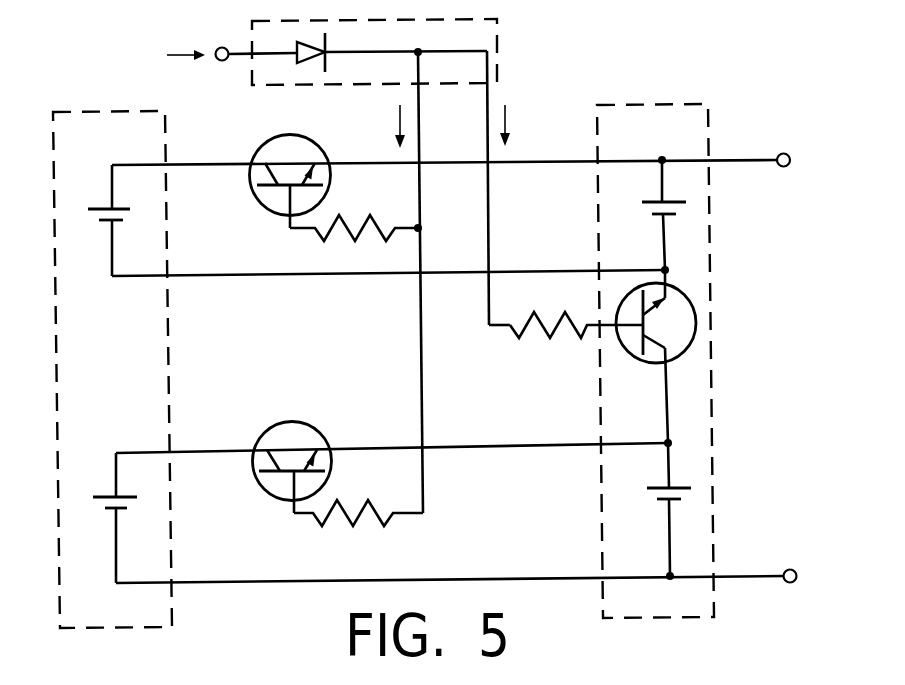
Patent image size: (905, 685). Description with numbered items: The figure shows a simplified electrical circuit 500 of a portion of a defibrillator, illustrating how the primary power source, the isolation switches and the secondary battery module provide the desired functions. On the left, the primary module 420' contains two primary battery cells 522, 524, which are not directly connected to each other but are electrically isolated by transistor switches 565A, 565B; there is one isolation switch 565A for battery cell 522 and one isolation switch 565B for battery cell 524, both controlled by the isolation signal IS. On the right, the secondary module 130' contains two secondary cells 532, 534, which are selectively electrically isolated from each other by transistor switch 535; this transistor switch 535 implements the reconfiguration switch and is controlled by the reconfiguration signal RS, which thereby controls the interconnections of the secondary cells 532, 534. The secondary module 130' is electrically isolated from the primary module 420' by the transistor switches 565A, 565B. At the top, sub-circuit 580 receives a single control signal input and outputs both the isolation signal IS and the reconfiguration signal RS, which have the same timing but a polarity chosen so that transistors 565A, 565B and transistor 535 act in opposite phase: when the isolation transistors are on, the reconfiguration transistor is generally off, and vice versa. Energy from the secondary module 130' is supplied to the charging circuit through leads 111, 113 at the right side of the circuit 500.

The electrical circuit 500 is at (592, 66).
The sub-circuit 580 is at (497, 54).
The primary module 420' is at (135, 373).
The secondary module 130' is at (649, 366).
The primary battery cell 522 is at (118, 221).
The primary battery cell 524 is at (122, 508).
The transistor switch 565A is at (300, 136).
The transistor switch 565B is at (303, 420).
The secondary cell 532 is at (689, 202).
The secondary cell 534 is at (690, 484).
The transistor switch 535 is at (690, 300).
The lead 111 is at (778, 153).
The lead 113 is at (784, 572).